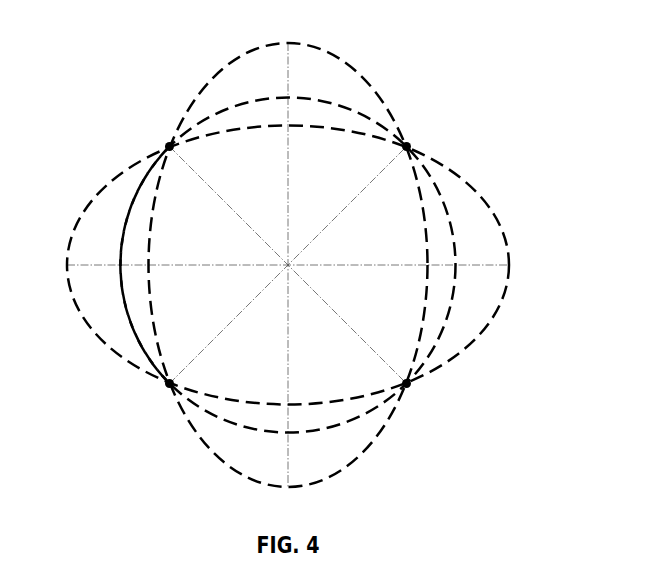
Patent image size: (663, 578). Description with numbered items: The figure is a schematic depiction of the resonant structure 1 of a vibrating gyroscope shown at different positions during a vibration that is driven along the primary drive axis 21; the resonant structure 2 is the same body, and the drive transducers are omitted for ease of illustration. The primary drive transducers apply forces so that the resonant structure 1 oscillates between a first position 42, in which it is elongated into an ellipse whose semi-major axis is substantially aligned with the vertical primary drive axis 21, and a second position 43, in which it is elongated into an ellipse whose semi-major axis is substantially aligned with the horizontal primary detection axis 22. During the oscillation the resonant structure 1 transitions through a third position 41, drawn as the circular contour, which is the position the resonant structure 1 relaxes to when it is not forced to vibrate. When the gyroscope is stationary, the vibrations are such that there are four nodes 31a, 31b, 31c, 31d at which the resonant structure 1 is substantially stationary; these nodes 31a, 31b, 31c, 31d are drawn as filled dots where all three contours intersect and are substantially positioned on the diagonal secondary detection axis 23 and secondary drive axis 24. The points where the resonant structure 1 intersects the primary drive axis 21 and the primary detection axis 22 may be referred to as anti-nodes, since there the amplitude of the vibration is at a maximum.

The resonant structure 1 is at (177, 74).
The resonant structure 2 is at (142, 183).
The primary drive axis 21 is at (289, 77).
The primary detection axis 22 is at (448, 266).
The secondary detection axis 23 is at (366, 188).
The secondary drive axis 24 is at (377, 355).
The node 31a is at (168, 144).
The node 31b is at (168, 385).
The node 31c is at (408, 385).
The node 31d is at (408, 145).
The third position 41 is at (381, 123).
The first position 42 is at (377, 93).
The second position 43 is at (491, 209).